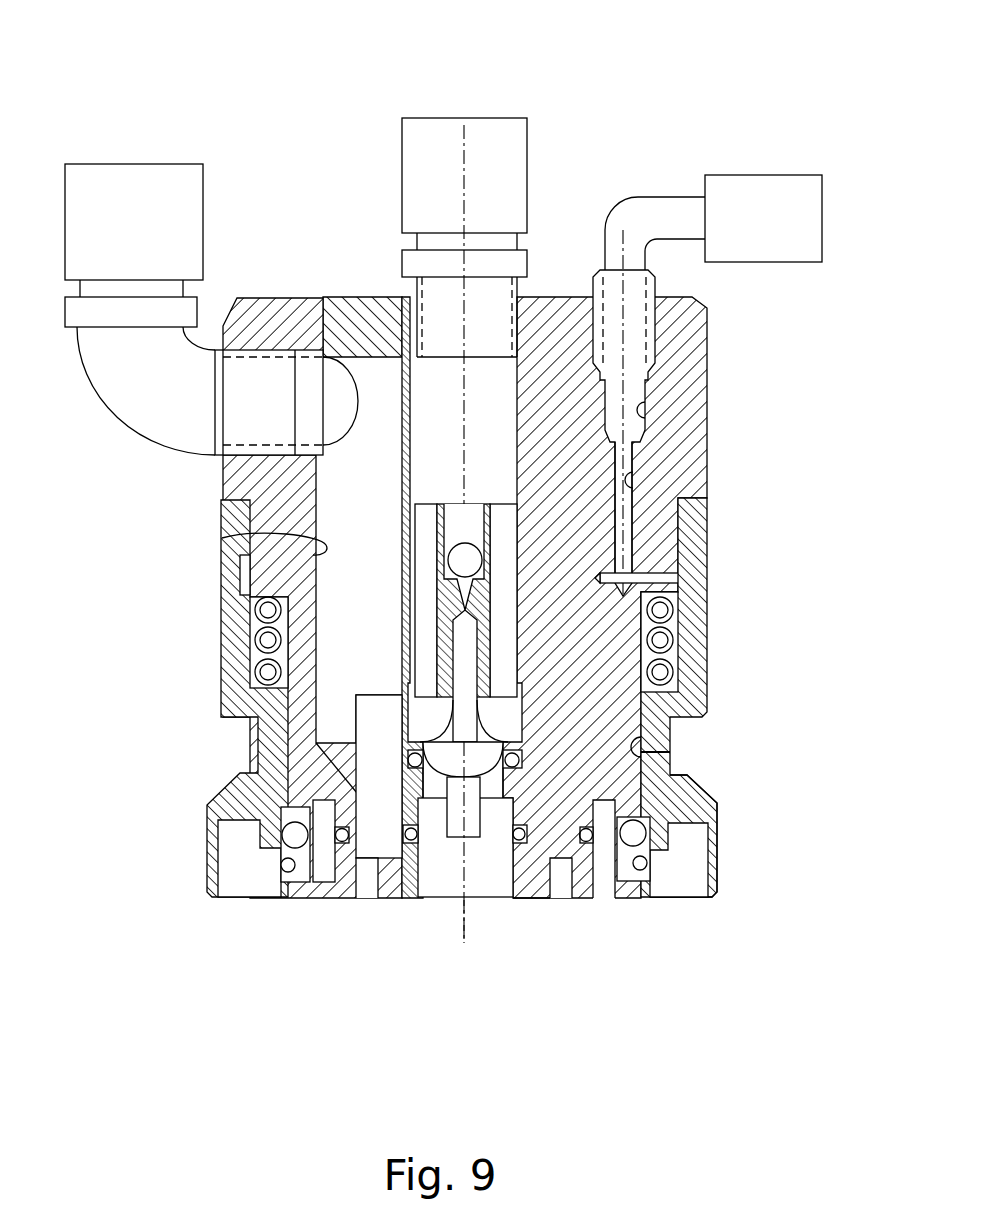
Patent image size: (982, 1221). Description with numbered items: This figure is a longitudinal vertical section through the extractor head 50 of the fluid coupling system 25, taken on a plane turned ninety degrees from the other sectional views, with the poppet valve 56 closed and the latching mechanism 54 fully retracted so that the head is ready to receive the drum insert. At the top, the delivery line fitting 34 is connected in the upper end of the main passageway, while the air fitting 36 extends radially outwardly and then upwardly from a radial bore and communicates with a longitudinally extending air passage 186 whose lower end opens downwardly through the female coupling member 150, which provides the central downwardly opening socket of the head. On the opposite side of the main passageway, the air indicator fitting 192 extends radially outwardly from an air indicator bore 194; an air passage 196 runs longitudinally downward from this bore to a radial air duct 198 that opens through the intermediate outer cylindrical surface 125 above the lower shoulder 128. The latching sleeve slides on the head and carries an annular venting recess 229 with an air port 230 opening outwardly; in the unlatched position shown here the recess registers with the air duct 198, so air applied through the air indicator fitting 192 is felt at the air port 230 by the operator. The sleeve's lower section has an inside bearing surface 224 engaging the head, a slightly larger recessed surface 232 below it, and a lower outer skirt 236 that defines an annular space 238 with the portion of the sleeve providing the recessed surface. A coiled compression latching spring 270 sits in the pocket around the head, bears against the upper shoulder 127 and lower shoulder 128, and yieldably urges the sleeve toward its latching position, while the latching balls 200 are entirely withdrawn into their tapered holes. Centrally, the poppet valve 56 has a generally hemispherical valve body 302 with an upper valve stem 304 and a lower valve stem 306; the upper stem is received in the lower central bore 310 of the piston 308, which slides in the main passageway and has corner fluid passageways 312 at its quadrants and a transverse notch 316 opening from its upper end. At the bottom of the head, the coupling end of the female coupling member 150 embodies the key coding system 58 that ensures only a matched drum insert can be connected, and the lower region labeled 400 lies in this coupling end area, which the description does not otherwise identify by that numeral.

The fluid coupling system 25 is at (245, 75).
The delivery line fitting 34 is at (402, 148).
The air fitting 36 is at (203, 170).
The extractor head 50 is at (278, 300).
The latching mechanism 54 is at (665, 873).
The poppet valve 56 is at (481, 880).
The key coding system 58 is at (358, 917).
The intermediate outer cylindrical surface 125 is at (700, 500).
The upper shoulder 127 is at (232, 500).
The lower shoulder 128 is at (250, 602).
The female coupling member 150 is at (408, 898).
The air passage 186 is at (222, 538).
The air indicator fitting 192 is at (748, 175).
The air indicator bore 194 is at (637, 490).
The air passage 196 is at (650, 417).
The radial air duct 198 is at (685, 523).
The latching balls 200 is at (617, 866).
The bearing surface 224 is at (645, 752).
The venting recess 229 is at (690, 592).
The air port 230 is at (692, 578).
The recessed surface 232 is at (645, 806).
The lower outer skirt 236 is at (718, 855).
The annular space 238 is at (238, 852).
The latching spring 270 is at (290, 648).
The valve body 302 is at (449, 771).
The upper valve stem 304 is at (460, 702).
The lower valve stem 306 is at (453, 840).
The piston 308 is at (418, 630).
The lower central bore 310 is at (448, 660).
The corner fluid passageways 312 is at (420, 562).
The transverse notch 316 is at (456, 520).
The bottom face 400 is at (533, 897).